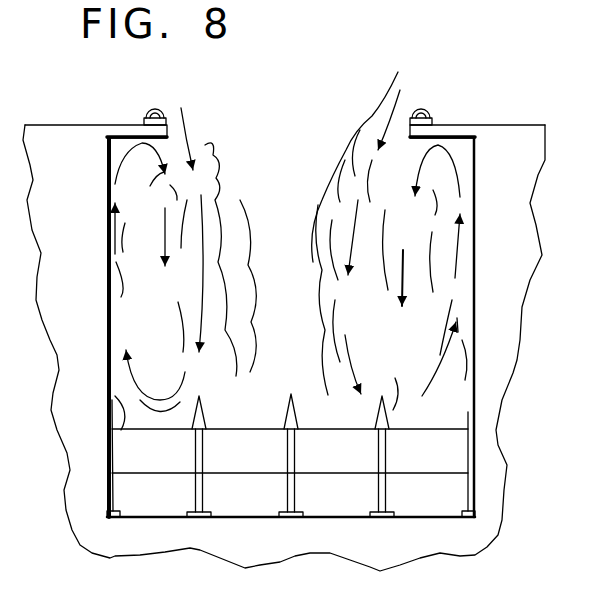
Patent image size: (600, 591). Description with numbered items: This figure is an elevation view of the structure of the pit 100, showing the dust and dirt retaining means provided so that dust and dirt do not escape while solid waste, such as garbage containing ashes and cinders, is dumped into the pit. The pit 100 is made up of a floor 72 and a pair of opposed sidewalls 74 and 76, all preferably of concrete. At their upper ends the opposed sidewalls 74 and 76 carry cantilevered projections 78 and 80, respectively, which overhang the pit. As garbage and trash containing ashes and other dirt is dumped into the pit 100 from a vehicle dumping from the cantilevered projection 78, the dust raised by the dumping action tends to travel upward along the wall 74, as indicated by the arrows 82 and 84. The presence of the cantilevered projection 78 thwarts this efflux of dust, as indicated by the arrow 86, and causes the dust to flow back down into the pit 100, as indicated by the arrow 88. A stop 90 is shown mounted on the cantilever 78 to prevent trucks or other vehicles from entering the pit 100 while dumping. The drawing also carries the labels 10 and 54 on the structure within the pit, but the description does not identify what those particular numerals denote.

The panel 10 is at (262, 428).
The spike 54 is at (293, 396).
The floor 72 is at (230, 512).
The sidewall 74 is at (476, 268).
The sidewall 76 is at (107, 297).
The cantilevered projection 78 is at (452, 125).
The cantilevered projection 80 is at (147, 81).
The arrow 82 is at (446, 357).
The arrow 84 is at (458, 258).
The arrow 86 is at (429, 160).
The arrow 88 is at (400, 268).
The stop 90 is at (424, 118).
The pit 100 is at (283, 152).